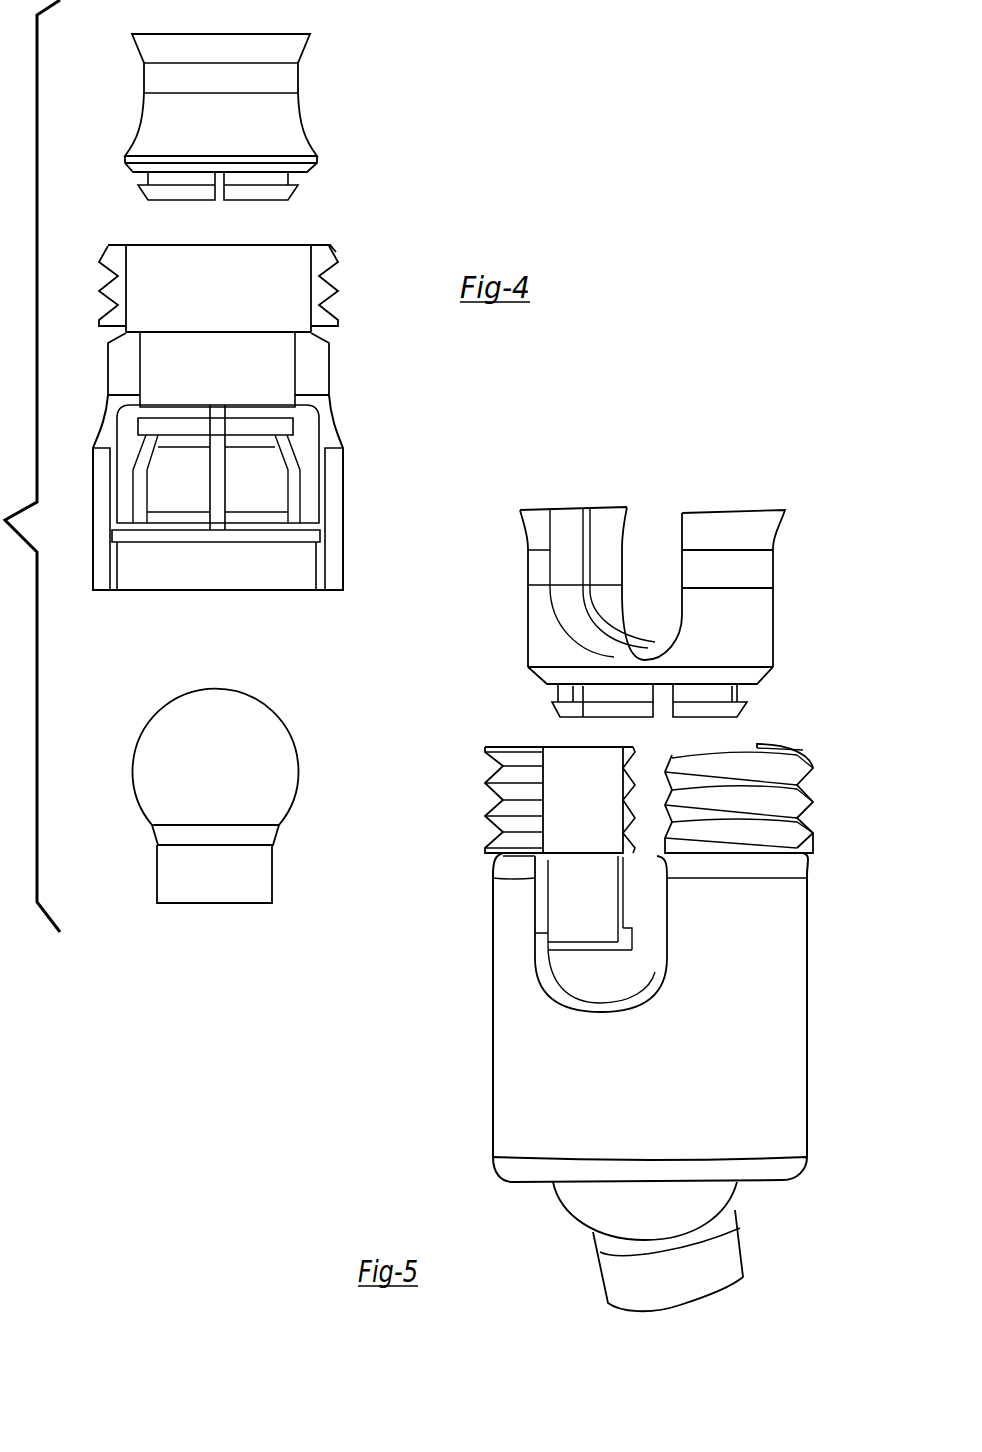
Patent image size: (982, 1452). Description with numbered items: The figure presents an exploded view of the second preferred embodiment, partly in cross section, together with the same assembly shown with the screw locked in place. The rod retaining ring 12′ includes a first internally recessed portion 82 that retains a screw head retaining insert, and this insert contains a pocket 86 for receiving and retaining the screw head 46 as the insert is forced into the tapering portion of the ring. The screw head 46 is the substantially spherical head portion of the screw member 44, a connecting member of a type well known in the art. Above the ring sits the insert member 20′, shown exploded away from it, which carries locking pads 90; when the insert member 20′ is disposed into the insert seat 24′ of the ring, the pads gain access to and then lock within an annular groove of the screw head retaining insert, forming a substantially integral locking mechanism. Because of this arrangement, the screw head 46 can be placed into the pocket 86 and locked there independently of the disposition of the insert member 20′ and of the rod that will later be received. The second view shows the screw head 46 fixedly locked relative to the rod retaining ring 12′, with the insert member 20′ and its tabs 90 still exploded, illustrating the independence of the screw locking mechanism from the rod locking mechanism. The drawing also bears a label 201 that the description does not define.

In FIG. 4, the cap / locking member 201 is at (312, 138).
In FIG. 4, the locking pads 90 is at (140, 190).
In FIG. 5, the locking pads 90 is at (707, 712).
In FIG. 4, the insert seat 24′ is at (140, 365).
In FIG. 4, the first internally recessed portion 82 is at (113, 492).
In FIG. 4, the pocket 86 is at (200, 488).
In FIG. 4, the screw head 46 is at (253, 713).
In FIG. 5, the screw head 46 is at (688, 1203).
In FIG. 4, the screw member 44 is at (272, 878).
In FIG. 5, the insert member 20′ is at (773, 645).
In FIG. 5, the rod retaining ring 12′ is at (763, 1008).